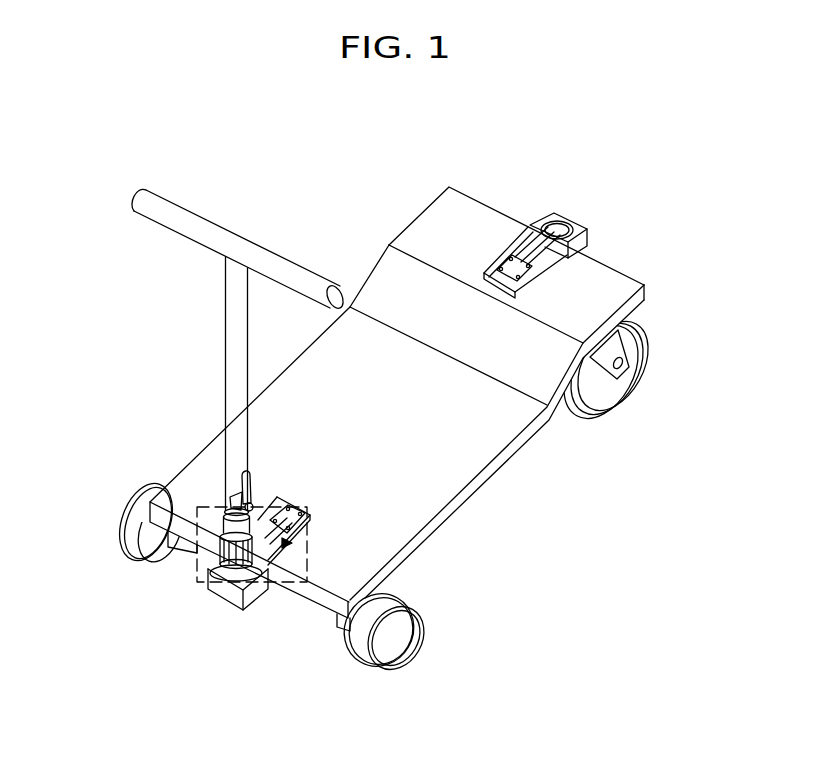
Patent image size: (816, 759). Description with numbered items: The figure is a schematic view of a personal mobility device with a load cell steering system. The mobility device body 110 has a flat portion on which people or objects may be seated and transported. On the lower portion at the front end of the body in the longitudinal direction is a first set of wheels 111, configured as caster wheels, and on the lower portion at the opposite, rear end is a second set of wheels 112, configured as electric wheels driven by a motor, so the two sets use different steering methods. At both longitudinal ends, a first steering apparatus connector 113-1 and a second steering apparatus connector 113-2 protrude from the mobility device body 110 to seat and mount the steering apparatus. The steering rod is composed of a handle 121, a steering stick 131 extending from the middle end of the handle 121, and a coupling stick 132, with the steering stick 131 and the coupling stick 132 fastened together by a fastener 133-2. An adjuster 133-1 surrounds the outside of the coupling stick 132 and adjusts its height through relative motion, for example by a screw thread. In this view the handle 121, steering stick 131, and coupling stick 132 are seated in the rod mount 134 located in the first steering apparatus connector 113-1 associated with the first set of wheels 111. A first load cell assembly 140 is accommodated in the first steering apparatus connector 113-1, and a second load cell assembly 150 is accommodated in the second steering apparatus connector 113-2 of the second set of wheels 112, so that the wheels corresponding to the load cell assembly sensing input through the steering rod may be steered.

The mobility device body 110 is at (450, 462).
The first set of wheels 111 is at (405, 633).
The second set of wheels 112 is at (632, 373).
The first steering apparatus connector 113-1 is at (262, 578).
The second steering apparatus connector 113-2 is at (589, 250).
The handle 121 is at (148, 207).
The steering stick 131 is at (236, 343).
The coupling stick 132 is at (220, 585).
The adjuster 133-1 is at (204, 560).
The fastener 133-2 is at (250, 474).
The rod mount 134 is at (588, 233).
The first load cell assembly 140 is at (307, 540).
The second load cell assembly 150 is at (525, 255).